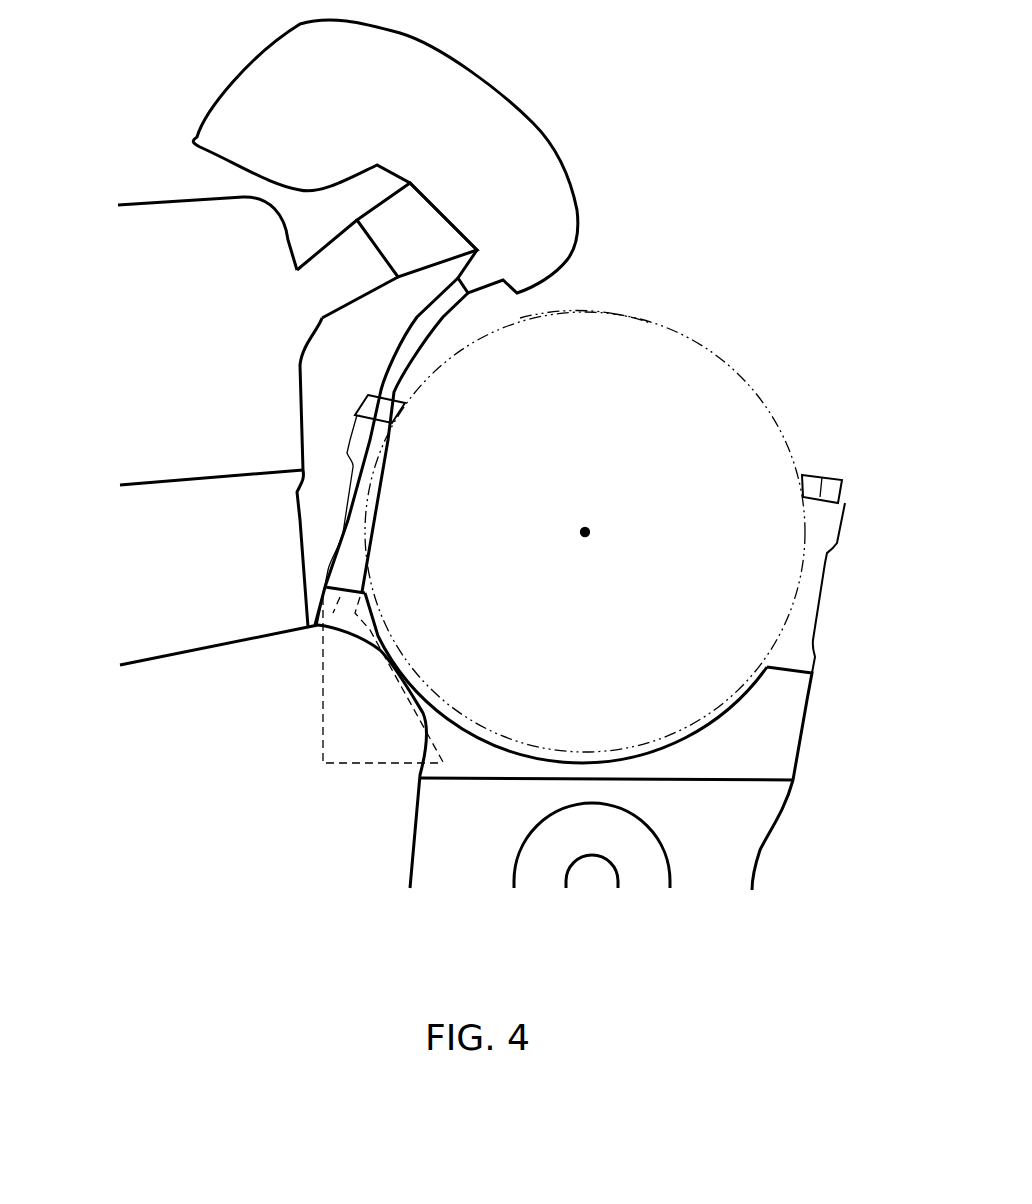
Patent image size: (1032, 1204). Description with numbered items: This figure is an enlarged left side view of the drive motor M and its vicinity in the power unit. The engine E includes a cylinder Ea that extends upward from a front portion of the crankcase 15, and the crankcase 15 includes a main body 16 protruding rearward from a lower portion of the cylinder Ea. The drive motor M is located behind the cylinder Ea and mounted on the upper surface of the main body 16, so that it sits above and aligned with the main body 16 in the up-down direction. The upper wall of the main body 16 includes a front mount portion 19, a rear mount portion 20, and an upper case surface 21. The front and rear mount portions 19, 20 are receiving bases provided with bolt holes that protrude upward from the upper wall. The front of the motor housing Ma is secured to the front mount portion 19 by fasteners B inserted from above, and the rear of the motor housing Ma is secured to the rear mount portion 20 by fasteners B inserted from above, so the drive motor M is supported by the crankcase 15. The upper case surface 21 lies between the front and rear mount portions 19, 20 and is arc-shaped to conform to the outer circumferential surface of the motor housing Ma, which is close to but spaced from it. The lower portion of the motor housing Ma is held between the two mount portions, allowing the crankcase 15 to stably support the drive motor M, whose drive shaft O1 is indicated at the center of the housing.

The engine E is at (128, 203).
The cylinder Ea is at (147, 365).
The drive motor M is at (722, 356).
The motor housing Ma is at (637, 315).
The drive shaft O1 is at (585, 532).
The fasteners B is at (367, 403).
The crankcase 15 is at (763, 842).
The main body 16 is at (802, 750).
The front mount portion 19 is at (350, 556).
The rear mount portion 20 is at (797, 670).
The upper case surface 21 is at (660, 730).